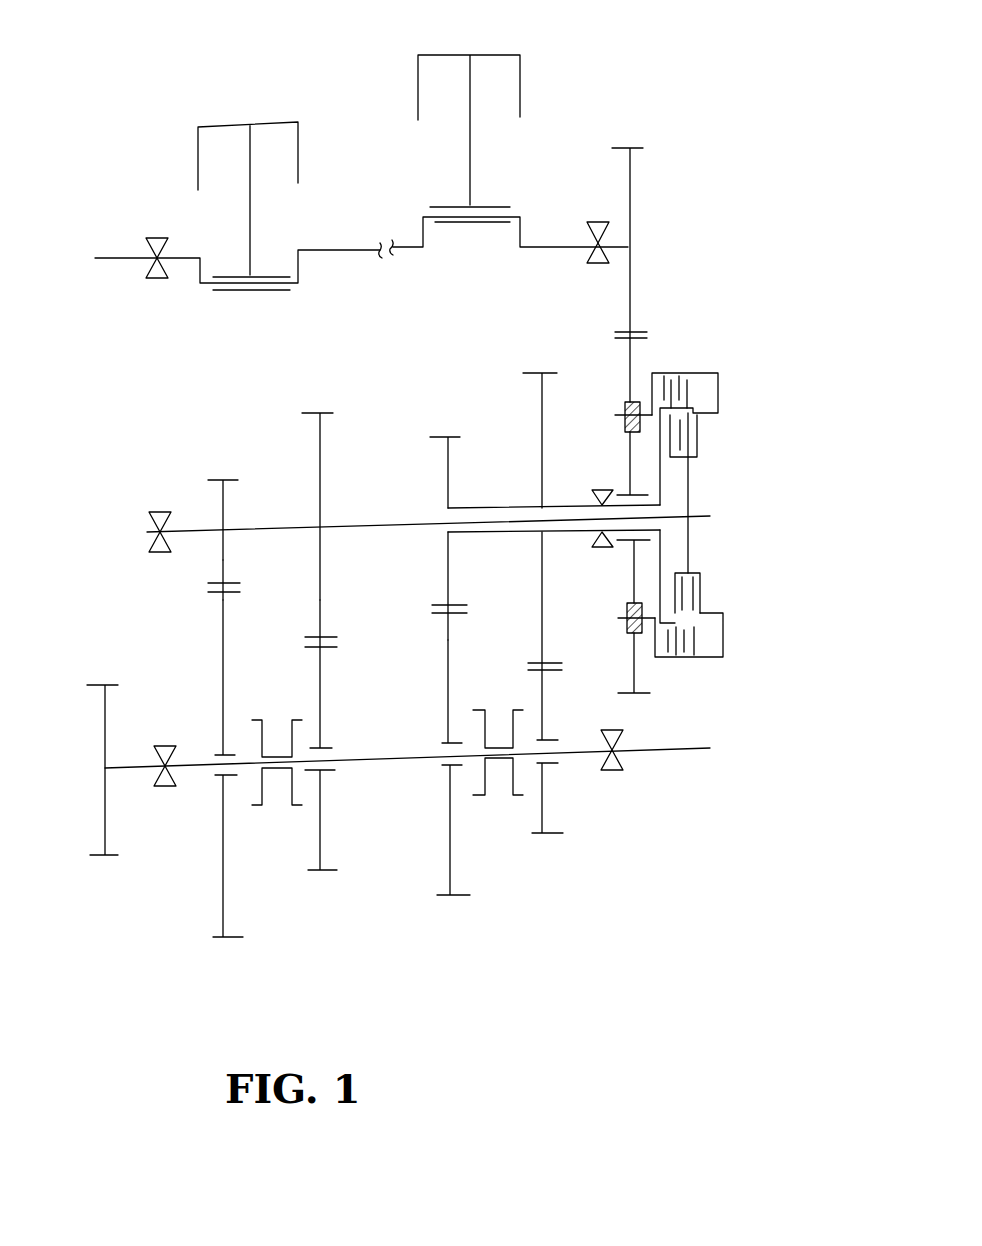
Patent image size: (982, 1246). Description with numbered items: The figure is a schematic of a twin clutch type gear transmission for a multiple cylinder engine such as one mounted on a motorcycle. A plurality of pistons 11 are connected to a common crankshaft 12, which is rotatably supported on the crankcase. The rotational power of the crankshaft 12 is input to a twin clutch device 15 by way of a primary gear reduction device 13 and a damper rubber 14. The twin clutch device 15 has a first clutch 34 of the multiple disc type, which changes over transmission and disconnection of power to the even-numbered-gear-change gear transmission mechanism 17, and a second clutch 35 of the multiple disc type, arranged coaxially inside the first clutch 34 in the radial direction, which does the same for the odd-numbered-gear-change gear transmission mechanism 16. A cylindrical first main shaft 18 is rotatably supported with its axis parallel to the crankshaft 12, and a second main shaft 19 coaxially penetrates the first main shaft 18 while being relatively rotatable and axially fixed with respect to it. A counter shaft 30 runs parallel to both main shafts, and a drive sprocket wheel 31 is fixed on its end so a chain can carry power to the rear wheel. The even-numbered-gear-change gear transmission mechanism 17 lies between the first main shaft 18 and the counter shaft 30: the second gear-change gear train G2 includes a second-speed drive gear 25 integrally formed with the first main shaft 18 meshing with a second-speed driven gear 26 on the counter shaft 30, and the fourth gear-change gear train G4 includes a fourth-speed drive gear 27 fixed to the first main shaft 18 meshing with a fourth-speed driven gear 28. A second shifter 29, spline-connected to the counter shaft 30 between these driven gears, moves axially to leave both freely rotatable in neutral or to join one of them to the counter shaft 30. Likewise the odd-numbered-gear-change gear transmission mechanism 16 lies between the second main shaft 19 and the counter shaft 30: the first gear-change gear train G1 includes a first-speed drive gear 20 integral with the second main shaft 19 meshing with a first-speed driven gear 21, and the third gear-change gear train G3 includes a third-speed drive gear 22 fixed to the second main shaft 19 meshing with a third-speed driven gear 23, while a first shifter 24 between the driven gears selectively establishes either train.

The piston 11 is at (198, 155).
The crankshaft 12 is at (343, 250).
The primary gear reduction device 13 is at (657, 330).
The damper rubber 14 is at (625, 415).
The twin clutch device 15 is at (758, 481).
The odd-numbered-gear-change gear transmission mechanism 16 is at (213, 872).
The even-numbered-gear-change gear transmission mechanism 17 is at (459, 912).
The first main shaft 18 is at (523, 532).
The second main shaft 19 is at (268, 530).
The first-speed drive gear 20 is at (223, 560).
The first-speed driven gear 21 is at (223, 637).
The third-speed drive gear 22 is at (320, 593).
The third-speed driven gear 23 is at (320, 848).
The first shifter 24 is at (292, 805).
The second-speed drive gear 25 is at (448, 560).
The second-speed driven gear 26 is at (448, 655).
The fourth-speed drive gear 27 is at (542, 613).
The fourth-speed driven gear 28 is at (548, 805).
The second shifter 29 is at (513, 785).
The counter shaft 30 is at (407, 760).
The drive sprocket wheel 31 is at (105, 857).
The first clutch 34 is at (687, 362).
The second clutch 35 is at (740, 498).
The first gear-change gear train G1 is at (216, 507).
The second gear-change gear train G2 is at (441, 477).
The third gear-change gear train G3 is at (313, 488).
The fourth gear-change gear train G4 is at (536, 427).